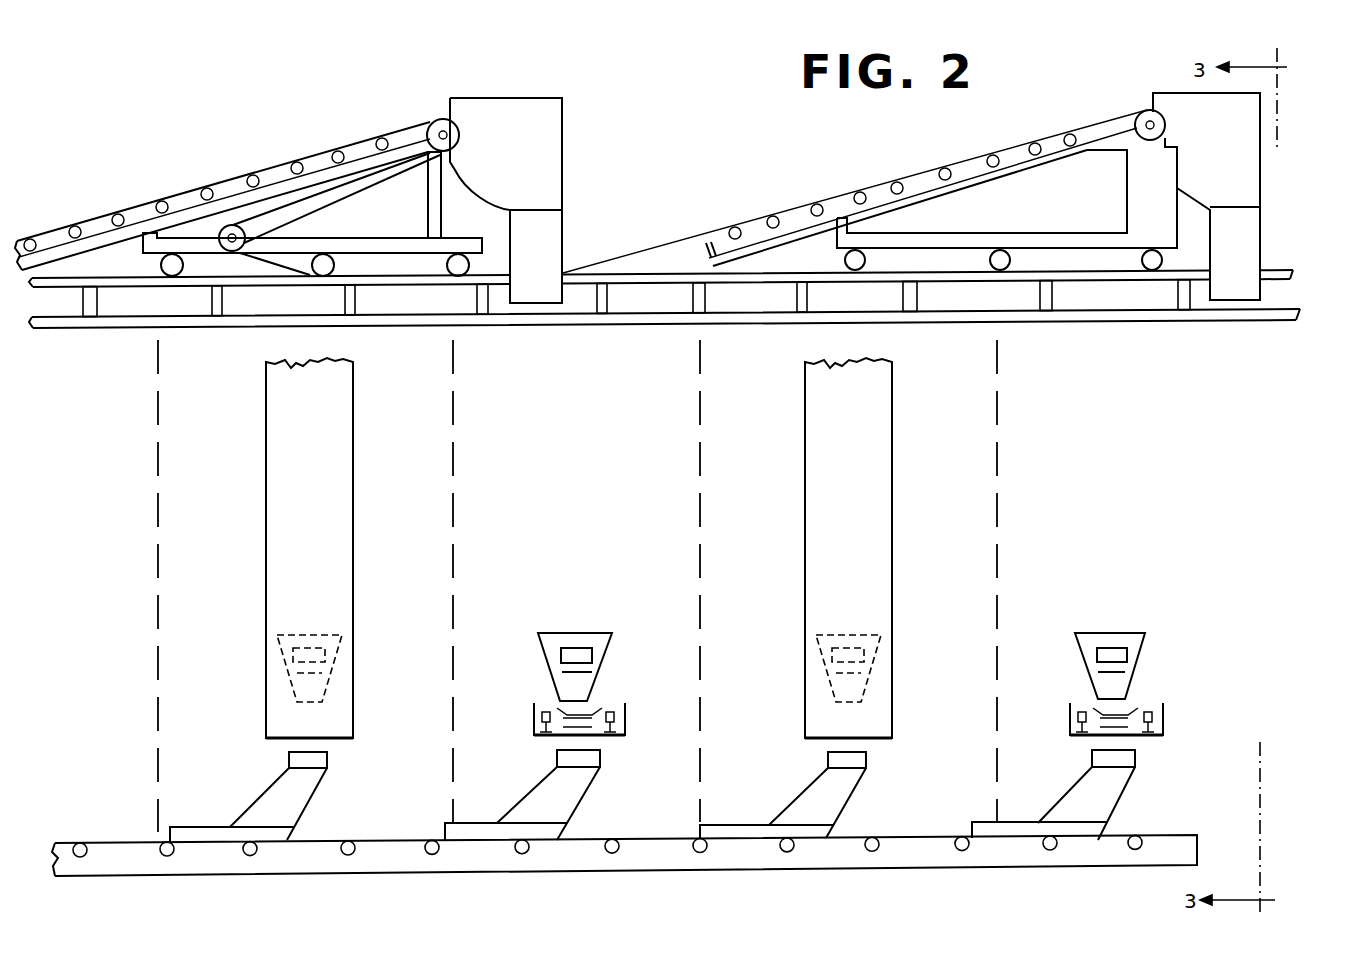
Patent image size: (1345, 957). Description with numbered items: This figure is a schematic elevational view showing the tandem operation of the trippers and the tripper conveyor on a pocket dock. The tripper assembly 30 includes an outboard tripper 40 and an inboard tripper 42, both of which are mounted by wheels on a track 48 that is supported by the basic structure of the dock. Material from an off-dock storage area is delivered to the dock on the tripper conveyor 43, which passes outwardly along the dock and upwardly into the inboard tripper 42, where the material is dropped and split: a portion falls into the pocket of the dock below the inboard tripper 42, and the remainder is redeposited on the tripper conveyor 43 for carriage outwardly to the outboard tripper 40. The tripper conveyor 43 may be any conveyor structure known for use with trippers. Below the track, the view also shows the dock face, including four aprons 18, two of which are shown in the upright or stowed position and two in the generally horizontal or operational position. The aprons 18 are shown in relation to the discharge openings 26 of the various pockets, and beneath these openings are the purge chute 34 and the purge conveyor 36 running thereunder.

The aprons 18 is at (342, 522).
The discharge openings 26 is at (337, 672).
The tripper assembly 30 is at (612, 118).
The purge chute 34 is at (267, 803).
The purge conveyor 36 is at (375, 840).
The outboard tripper 40 is at (1247, 166).
The inboard tripper 42 is at (551, 173).
The tripper conveyor 43 is at (78, 227).
The track 48 is at (750, 277).